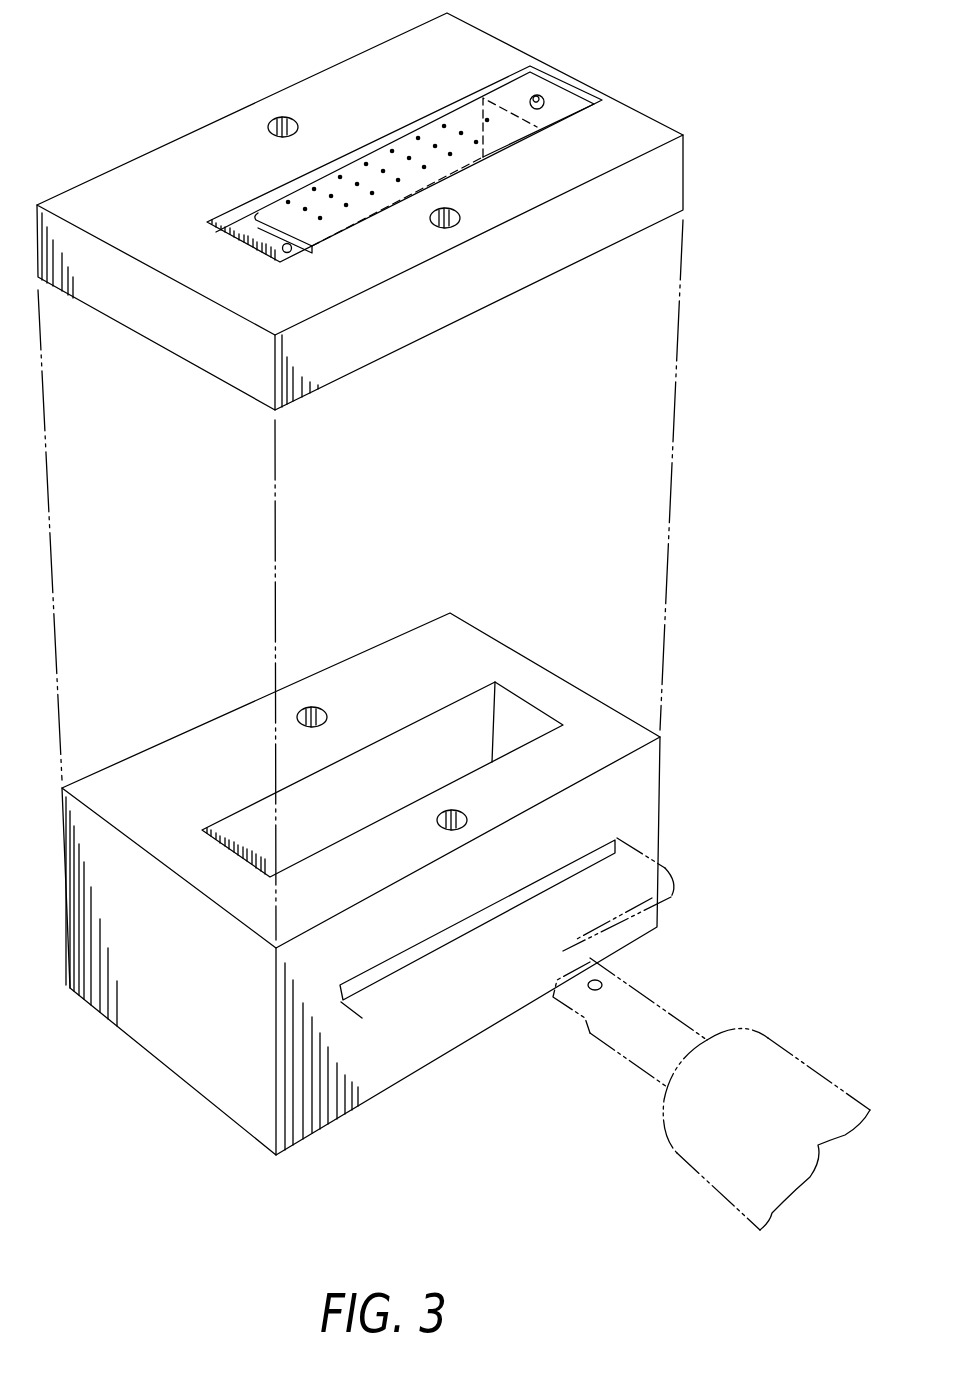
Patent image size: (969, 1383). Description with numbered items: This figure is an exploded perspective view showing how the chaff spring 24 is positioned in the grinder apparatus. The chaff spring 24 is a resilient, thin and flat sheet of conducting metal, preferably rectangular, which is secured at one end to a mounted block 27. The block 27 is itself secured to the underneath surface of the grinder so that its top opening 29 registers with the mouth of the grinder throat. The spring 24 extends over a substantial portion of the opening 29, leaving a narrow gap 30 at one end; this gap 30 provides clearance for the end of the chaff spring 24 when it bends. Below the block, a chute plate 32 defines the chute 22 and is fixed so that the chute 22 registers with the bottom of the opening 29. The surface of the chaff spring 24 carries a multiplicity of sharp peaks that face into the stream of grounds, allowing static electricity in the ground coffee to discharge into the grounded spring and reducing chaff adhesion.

The chute 22 is at (458, 723).
The chaff spring 24 is at (468, 115).
The mounted block 27 is at (617, 100).
The top opening 29 is at (292, 252).
The gap 30 is at (224, 220).
The chute plate 32 is at (550, 670).